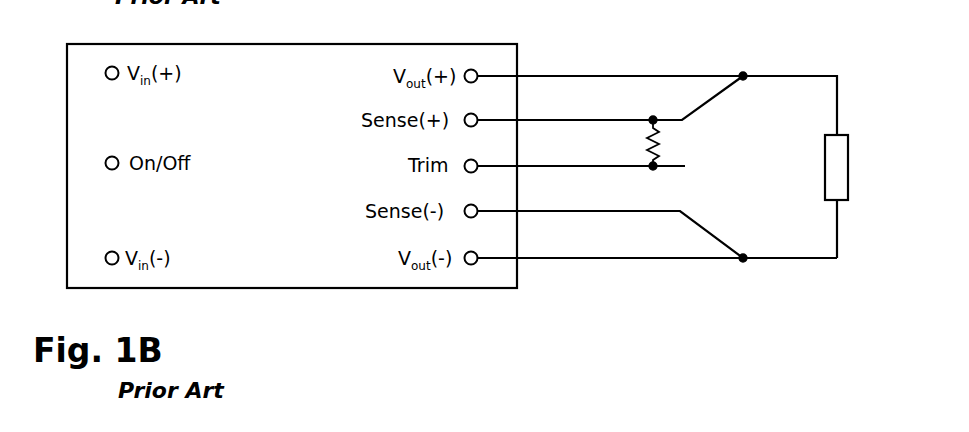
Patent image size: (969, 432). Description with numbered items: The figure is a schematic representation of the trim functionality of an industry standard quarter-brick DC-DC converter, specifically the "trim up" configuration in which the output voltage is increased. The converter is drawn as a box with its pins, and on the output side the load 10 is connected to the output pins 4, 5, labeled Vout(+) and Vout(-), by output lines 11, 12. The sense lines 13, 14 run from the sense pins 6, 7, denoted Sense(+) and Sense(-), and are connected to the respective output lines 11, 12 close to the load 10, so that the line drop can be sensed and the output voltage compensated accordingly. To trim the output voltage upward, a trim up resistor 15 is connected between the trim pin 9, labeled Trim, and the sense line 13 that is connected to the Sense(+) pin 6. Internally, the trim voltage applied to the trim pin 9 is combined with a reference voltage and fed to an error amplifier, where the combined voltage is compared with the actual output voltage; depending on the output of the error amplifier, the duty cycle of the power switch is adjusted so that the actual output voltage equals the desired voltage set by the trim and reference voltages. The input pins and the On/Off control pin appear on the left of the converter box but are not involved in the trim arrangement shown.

The output pin Vout(+) 4 is at (471, 69).
The output pin Vout(-) 5 is at (468, 265).
The Sense(+) pin 6 is at (480, 118).
The Sense(-) pin 7 is at (480, 210).
The trim pin 9 is at (480, 165).
The load 10 is at (848, 165).
The output line 11 is at (641, 75).
The output line 12 is at (590, 262).
The sense line 13 is at (682, 120).
The sense line 14 is at (680, 212).
The trim up resistor 15 is at (650, 145).